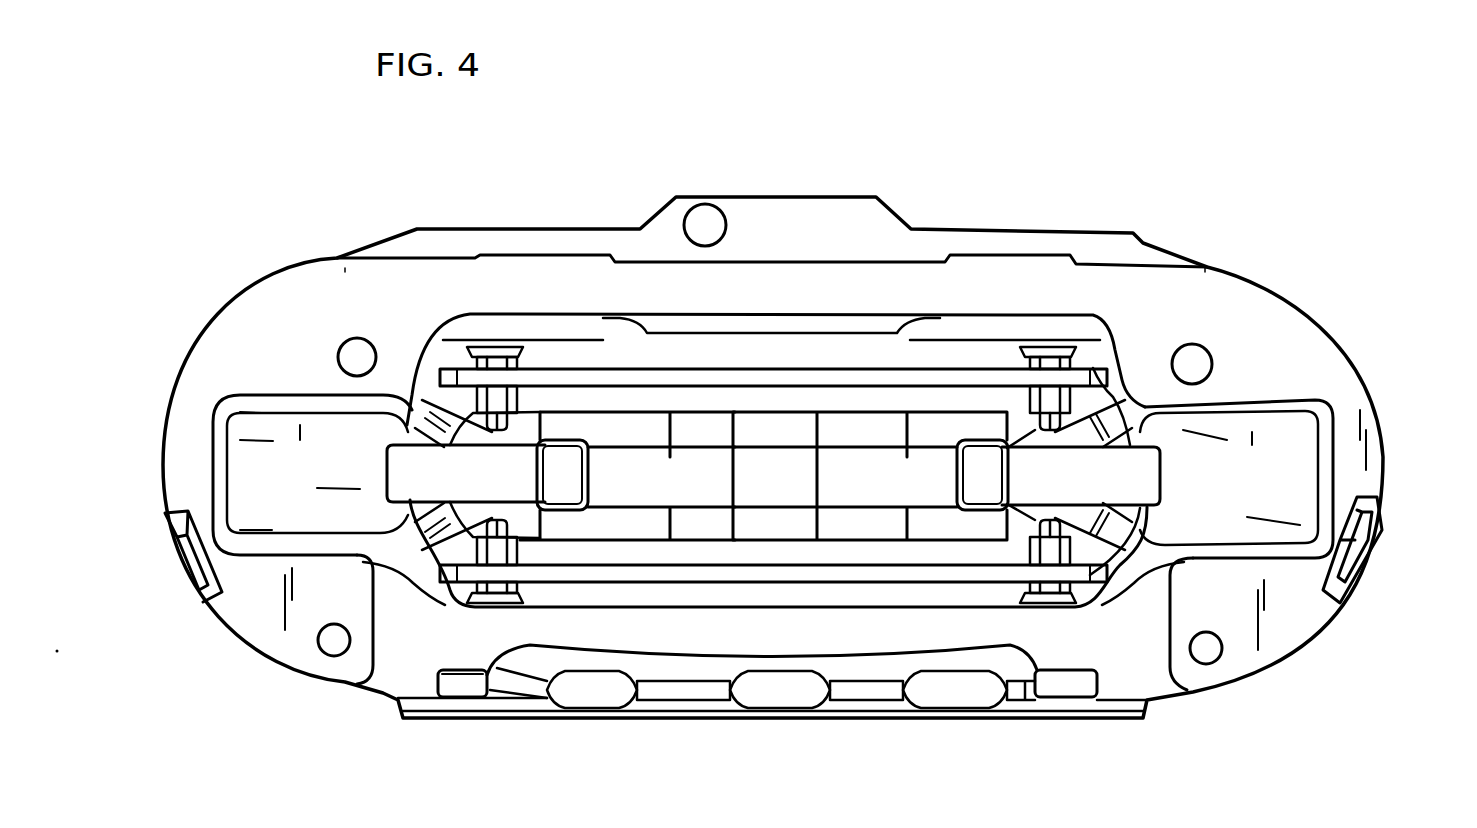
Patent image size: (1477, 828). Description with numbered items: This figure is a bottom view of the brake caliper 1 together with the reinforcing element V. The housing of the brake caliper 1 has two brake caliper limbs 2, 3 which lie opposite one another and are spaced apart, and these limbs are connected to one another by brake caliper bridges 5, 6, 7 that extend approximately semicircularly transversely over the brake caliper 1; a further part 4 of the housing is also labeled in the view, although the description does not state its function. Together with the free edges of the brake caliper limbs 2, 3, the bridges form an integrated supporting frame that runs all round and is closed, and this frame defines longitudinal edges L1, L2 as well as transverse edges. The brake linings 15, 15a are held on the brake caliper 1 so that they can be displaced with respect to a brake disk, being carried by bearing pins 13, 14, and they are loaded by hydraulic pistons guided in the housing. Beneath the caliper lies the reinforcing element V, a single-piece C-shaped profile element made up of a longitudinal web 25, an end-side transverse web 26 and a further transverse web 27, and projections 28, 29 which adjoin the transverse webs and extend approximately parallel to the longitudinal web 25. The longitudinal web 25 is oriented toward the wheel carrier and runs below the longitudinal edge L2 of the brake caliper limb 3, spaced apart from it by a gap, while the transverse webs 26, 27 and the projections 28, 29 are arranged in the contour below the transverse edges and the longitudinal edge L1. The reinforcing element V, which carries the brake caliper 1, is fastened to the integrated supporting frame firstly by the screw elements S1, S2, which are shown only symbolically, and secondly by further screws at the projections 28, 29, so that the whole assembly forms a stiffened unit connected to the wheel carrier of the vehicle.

The brake caliper 1 is at (1220, 240).
The brake caliper limb 2 is at (731, 622).
The brake caliper limb 3 is at (885, 323).
The left shaft part 4 is at (665, 450).
The brake caliper bridge 5 is at (877, 430).
The brake caliper bridge 6 is at (282, 430).
The brake caliper bridge 7 is at (1247, 435).
The bearing pin 13 is at (490, 392).
The bearing pin 14 is at (1067, 355).
The brake lining 15 is at (613, 555).
The brake lining 15a is at (967, 397).
The longitudinal web 25 is at (567, 283).
The transverse web 26 is at (168, 470).
The transverse web 27 is at (1378, 500).
The projection 28 is at (1240, 657).
The projection 29 is at (280, 620).
The screw element S1 is at (357, 355).
The screw element S2 is at (1193, 357).
The longitudinal edge L1 is at (764, 330).
The longitudinal edge L2 is at (903, 637).
The reinforcing element V is at (408, 284).